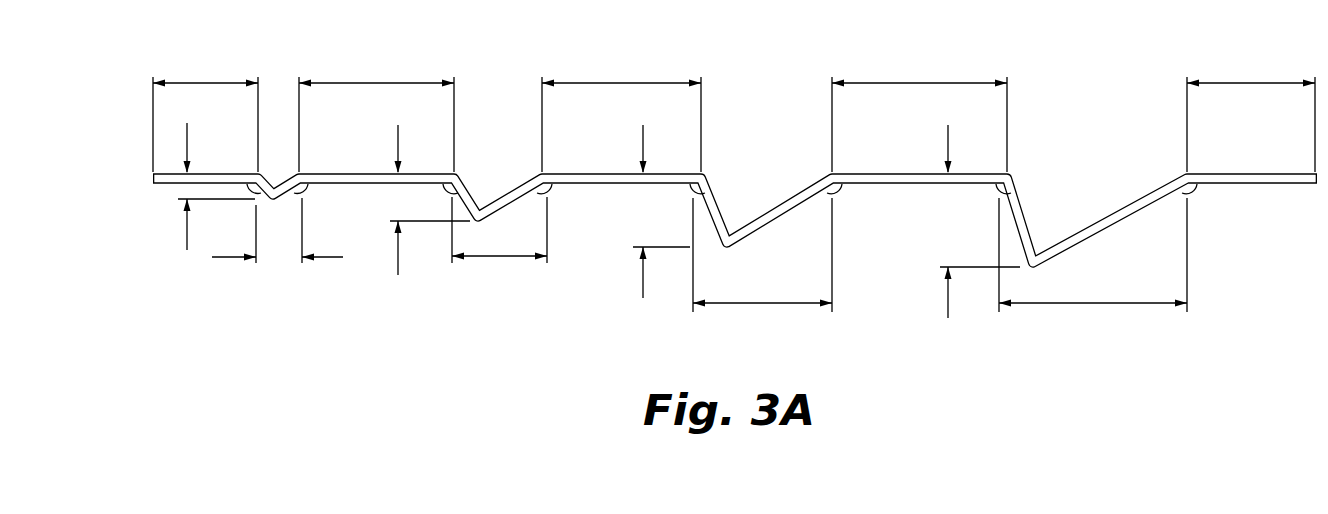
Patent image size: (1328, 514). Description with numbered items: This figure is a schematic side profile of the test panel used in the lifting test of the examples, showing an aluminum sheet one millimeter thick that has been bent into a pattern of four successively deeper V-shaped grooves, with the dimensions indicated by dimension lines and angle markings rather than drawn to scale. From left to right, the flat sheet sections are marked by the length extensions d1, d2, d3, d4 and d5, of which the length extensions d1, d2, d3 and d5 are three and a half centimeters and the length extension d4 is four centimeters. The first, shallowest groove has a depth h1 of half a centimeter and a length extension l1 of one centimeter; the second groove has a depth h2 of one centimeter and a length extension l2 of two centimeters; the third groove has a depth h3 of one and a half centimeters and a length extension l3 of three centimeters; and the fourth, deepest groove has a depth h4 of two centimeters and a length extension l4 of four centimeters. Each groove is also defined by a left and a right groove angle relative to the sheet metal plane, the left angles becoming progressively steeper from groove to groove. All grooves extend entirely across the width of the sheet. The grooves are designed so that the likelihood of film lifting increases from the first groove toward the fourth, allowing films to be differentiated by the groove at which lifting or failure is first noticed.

The length extension d1 is at (215, 82).
The length extension d2 is at (377, 83).
The length extension d3 is at (623, 83).
The length extension d4 is at (918, 83).
The length extension d5 is at (1247, 83).
The depth h1 is at (185, 133).
The depth h2 is at (397, 137).
The depth h3 is at (642, 137).
The depth h4 is at (947, 137).
The length extension l1 is at (233, 258).
The length extension l2 is at (495, 258).
The length extension l3 is at (758, 305).
The length extension l4 is at (1095, 305).